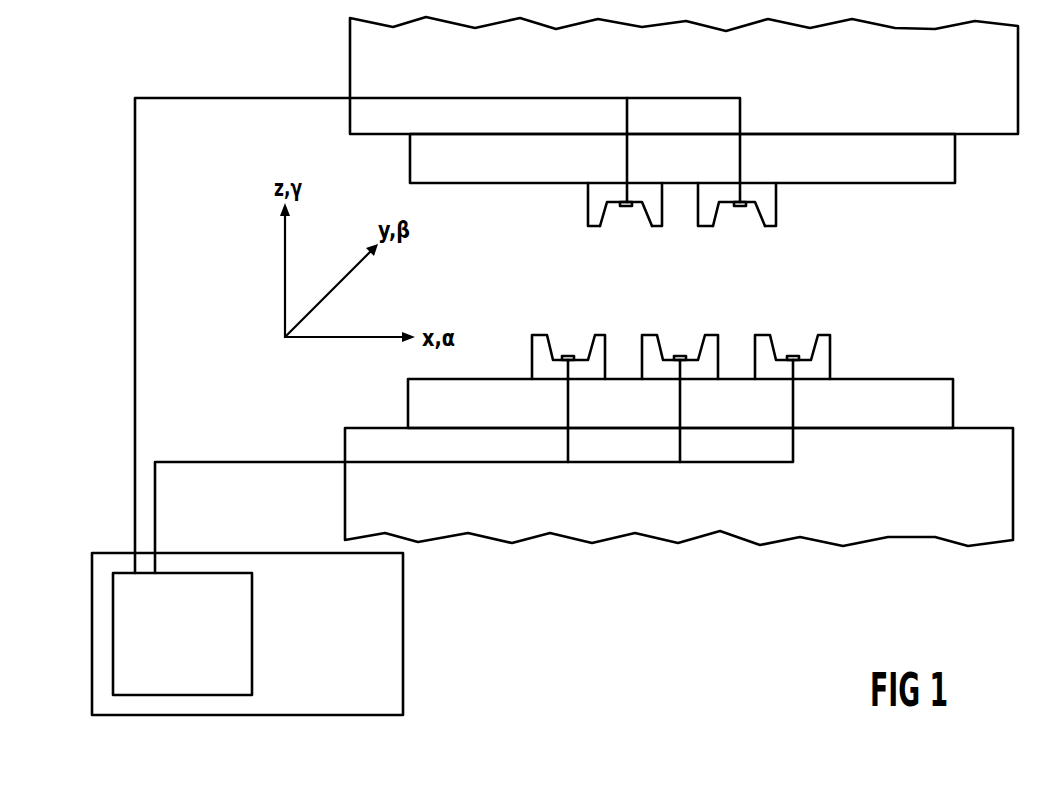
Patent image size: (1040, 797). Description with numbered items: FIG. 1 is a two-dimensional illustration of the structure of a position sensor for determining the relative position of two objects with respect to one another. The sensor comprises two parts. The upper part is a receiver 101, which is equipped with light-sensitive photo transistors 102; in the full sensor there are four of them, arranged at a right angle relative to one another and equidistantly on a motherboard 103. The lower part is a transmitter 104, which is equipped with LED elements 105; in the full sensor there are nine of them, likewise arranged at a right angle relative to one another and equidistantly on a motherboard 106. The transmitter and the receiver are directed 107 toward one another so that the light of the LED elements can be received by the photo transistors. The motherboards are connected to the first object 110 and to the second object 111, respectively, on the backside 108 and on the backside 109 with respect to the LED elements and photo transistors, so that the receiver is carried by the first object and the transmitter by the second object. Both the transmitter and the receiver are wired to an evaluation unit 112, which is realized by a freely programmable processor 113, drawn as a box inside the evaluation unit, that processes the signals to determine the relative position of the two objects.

The receiver 101 is at (757, 178).
The light-sensitive photo transistors 102 is at (655, 226).
The motherboard 103 is at (900, 184).
The transmitter 104 is at (810, 381).
The LED elements 105 is at (823, 342).
The motherboard 106 is at (916, 402).
The direction of transmitter and receiver toward one another 107 is at (588, 226).
The backside of the receiver motherboard 108 is at (410, 135).
The backside of the transmitter motherboard 109 is at (408, 422).
The first object 110 is at (992, 122).
The second object 111 is at (985, 450).
The evaluation unit 112 is at (380, 635).
The freely programmable processor 113 is at (183, 590).